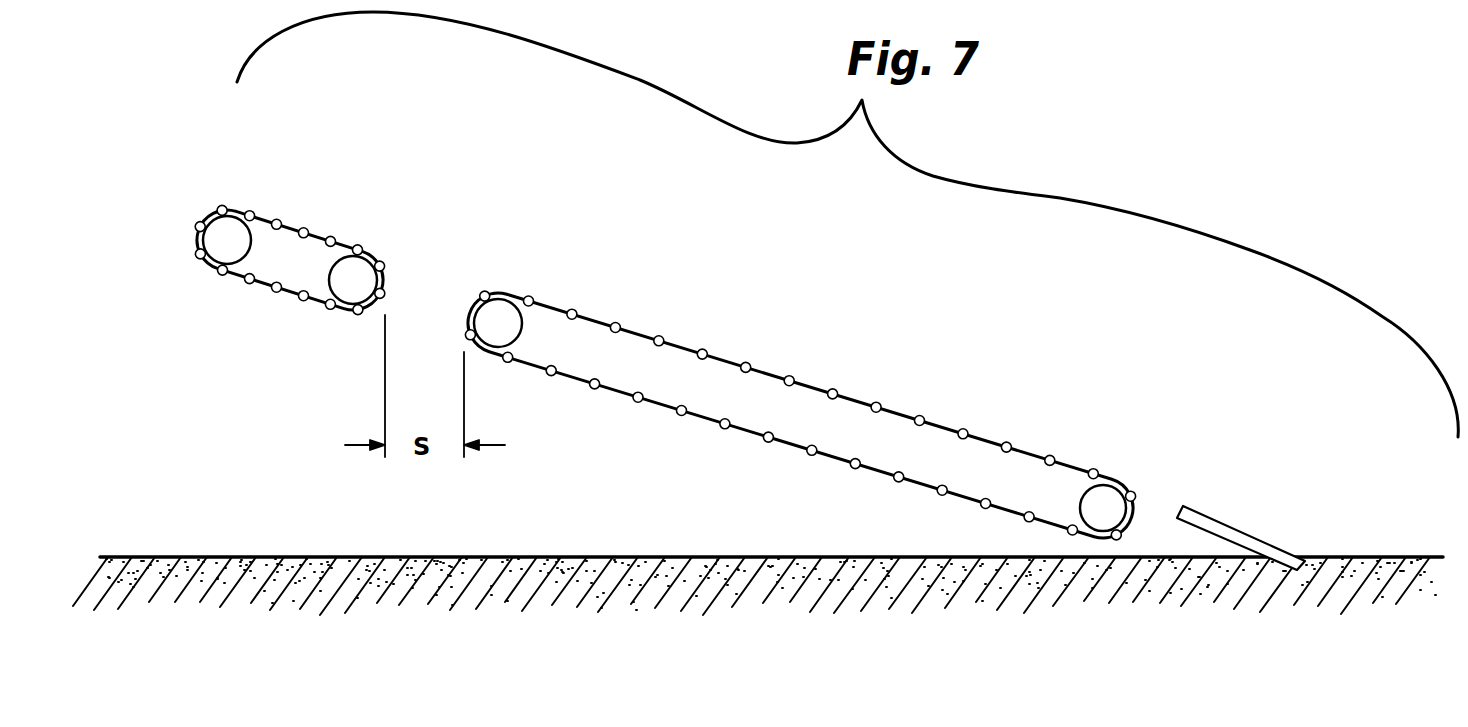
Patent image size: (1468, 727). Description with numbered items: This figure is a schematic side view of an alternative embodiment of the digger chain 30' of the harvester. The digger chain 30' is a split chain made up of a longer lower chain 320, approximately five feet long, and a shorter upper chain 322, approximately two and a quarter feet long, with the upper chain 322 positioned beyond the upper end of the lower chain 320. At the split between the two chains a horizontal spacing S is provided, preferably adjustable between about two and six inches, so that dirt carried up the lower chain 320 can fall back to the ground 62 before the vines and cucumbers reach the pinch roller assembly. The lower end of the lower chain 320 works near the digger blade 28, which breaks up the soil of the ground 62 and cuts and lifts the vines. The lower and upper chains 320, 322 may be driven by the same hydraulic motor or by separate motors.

The digger chain 30' is at (667, 362).
The lower chain 320 is at (810, 380).
The upper chain 322 is at (313, 230).
The ground 62 is at (652, 553).
The digger blade 28 is at (1219, 520).